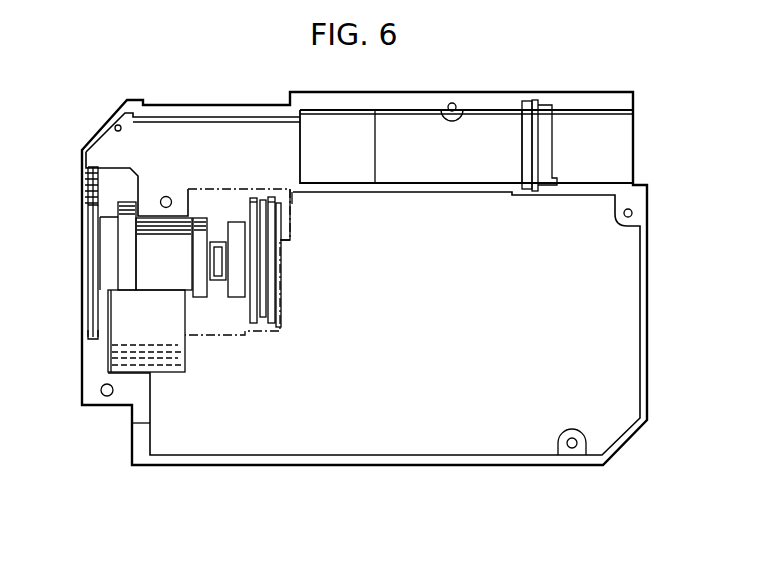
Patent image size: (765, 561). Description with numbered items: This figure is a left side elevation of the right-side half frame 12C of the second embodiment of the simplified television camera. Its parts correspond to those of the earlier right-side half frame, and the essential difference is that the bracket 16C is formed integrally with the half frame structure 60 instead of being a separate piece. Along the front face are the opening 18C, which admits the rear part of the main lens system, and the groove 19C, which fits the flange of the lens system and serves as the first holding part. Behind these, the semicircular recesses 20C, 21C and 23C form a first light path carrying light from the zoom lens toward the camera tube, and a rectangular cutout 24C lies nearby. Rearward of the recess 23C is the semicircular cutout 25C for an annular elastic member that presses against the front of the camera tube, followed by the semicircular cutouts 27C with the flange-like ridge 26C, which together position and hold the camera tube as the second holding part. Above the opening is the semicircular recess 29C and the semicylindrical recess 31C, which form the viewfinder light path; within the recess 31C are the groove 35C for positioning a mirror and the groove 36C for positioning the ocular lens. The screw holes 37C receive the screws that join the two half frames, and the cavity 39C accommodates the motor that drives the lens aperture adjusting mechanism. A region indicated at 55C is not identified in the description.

The bracket 16C is at (264, 462).
The groove for positioning a mirror 35C is at (117, 124).
The semicylindrical recess 31C is at (262, 128).
The screw holes 37C is at (455, 102).
The right-side half frame 12C is at (541, 80).
The groove for positioning the ocular lens 36C is at (540, 140).
The half frame structure 60 is at (450, 186).
The semicircular recess 29C is at (100, 192).
The groove 19C is at (95, 281).
The opening 18C is at (91, 326).
The semicircular recess 20C is at (124, 224).
The semicircular recess 21C is at (170, 226).
The cavity 39C is at (115, 350).
The rectangular cutout 24C is at (218, 281).
The semicircular recess 23C is at (238, 298).
The semicircular cutout 25C is at (252, 258).
The flange-like ridge 26C is at (262, 290).
The semicircular cutouts 27C is at (272, 309).
The region boundary 55C is at (294, 228).